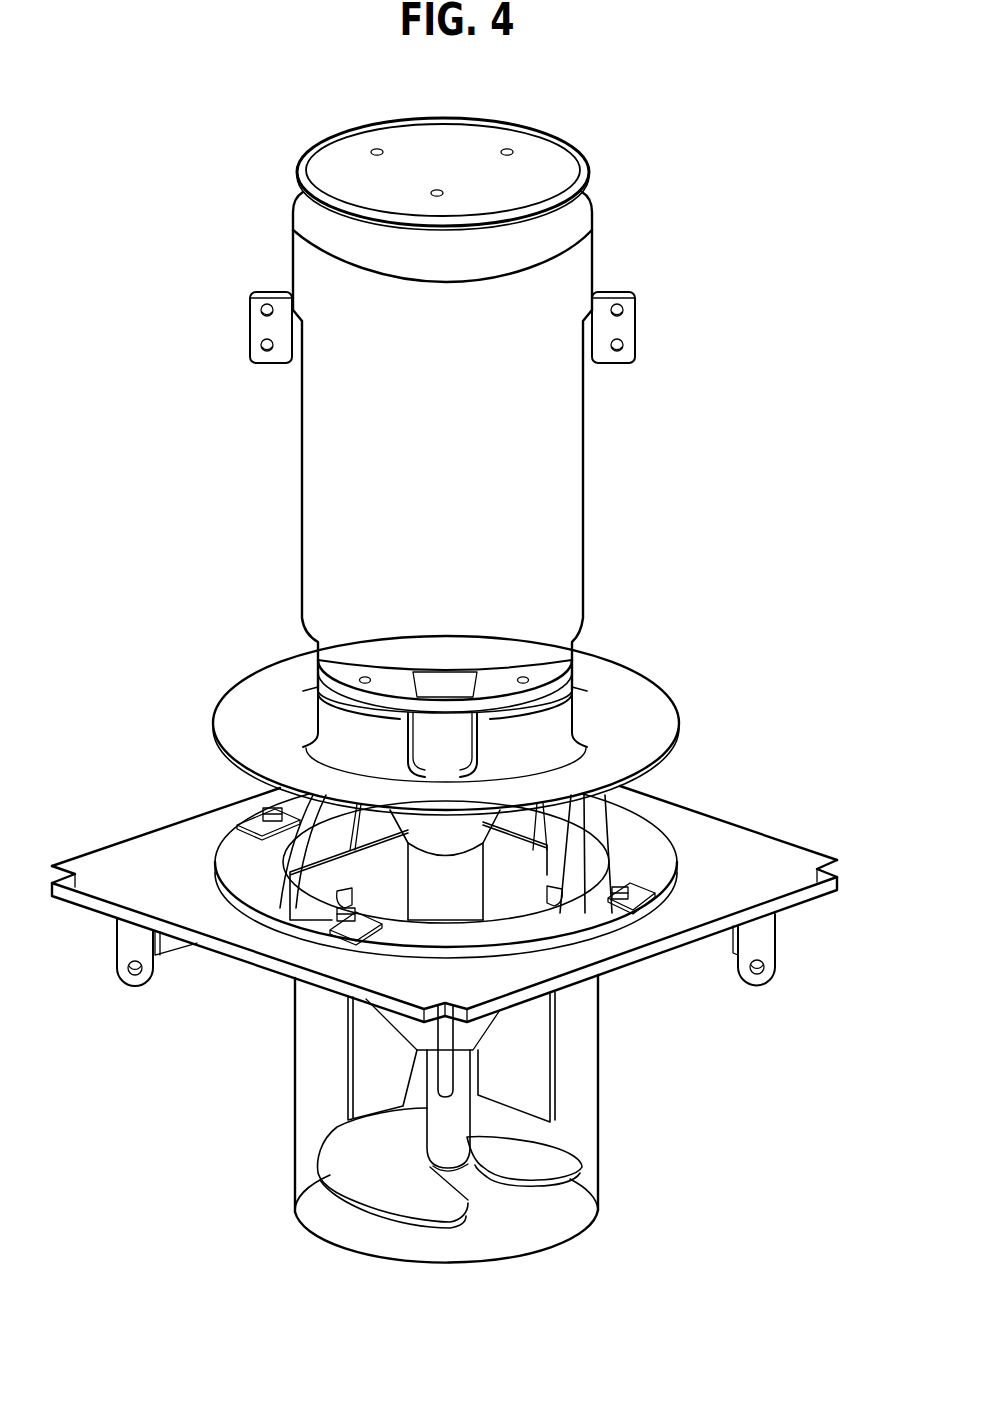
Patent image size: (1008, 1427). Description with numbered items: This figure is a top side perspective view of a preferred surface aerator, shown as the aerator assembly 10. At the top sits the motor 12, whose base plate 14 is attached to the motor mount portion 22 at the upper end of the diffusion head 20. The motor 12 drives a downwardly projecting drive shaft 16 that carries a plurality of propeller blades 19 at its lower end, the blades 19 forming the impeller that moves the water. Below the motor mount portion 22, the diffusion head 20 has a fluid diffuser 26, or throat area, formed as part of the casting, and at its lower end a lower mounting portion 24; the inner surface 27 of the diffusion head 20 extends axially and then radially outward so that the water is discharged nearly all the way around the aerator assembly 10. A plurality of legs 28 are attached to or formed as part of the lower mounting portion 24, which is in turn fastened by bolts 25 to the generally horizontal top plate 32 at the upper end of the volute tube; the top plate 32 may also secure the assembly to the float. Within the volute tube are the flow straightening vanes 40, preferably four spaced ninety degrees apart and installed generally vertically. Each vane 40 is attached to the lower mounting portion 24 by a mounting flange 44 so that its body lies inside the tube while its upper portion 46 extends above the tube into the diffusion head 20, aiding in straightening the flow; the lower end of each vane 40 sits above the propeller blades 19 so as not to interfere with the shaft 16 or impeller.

The aerator assembly 10 is at (670, 135).
The motor 12 is at (562, 520).
The base plate 14 is at (580, 664).
The drive shaft 16 is at (443, 1113).
The propeller blades 19 is at (442, 1203).
The diffusion head 20 is at (714, 766).
The motor mount portion 22 is at (583, 688).
The lower mounting portion 24 is at (608, 857).
The bolts 25 is at (264, 812).
The fluid diffuser 26 is at (375, 872).
The inner surface 27 is at (455, 905).
The legs 28 is at (653, 863).
The top plate 32 is at (807, 860).
The flow straightening vanes 40 is at (543, 1073).
The mounting flange 44 is at (410, 932).
The upper portion 46 is at (262, 855).